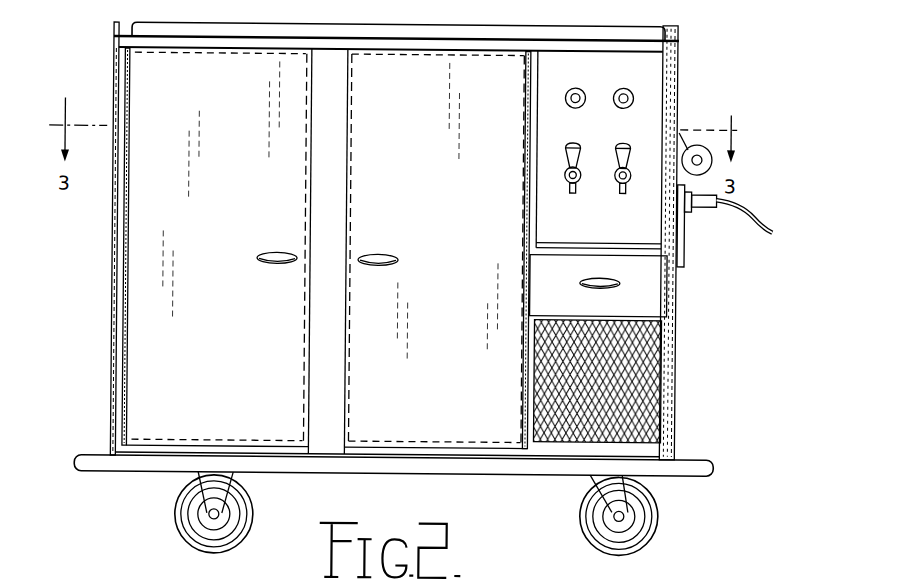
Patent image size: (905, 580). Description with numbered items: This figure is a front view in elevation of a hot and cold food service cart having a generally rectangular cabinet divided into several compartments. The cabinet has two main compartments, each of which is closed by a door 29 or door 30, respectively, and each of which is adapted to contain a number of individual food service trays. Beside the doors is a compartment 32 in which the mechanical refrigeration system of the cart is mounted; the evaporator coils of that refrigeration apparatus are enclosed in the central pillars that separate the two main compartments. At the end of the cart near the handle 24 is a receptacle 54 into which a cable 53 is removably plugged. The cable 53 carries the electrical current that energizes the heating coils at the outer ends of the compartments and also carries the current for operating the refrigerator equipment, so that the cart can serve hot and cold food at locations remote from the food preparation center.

The handle 24 is at (702, 141).
The door 29 is at (212, 377).
The door 30 is at (416, 375).
The compartment 32 is at (645, 376).
The cable 53 is at (751, 209).
The receptacle 54 is at (692, 208).